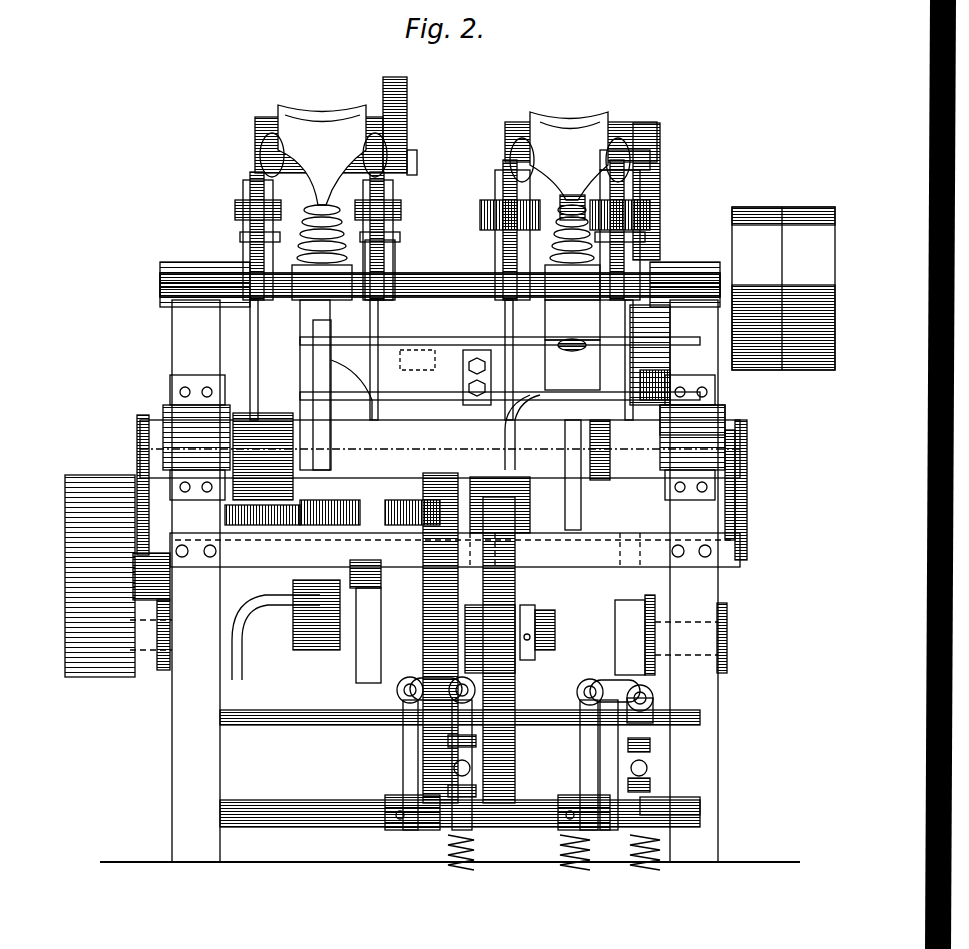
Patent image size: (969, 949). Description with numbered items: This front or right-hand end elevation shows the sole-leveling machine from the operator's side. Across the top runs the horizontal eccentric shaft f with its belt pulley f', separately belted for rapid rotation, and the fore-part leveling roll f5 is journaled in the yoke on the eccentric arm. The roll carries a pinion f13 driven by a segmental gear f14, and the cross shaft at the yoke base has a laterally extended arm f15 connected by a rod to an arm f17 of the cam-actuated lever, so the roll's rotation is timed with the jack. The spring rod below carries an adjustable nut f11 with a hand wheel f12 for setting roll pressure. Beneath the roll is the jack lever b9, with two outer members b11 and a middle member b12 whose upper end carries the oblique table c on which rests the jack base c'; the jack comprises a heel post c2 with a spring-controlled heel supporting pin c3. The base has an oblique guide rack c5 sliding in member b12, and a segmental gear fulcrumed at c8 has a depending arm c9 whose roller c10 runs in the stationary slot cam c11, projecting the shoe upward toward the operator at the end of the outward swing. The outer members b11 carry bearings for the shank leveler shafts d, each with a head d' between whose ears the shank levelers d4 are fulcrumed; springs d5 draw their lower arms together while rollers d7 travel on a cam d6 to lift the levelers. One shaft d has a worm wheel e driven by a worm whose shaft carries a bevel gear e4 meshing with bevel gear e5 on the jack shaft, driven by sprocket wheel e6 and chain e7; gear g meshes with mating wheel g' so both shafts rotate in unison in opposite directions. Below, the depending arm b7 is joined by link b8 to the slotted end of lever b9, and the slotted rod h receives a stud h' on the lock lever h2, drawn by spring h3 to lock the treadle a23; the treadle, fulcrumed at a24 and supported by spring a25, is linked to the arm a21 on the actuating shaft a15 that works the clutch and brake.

The frame standard H is at (445, 581).
The table c is at (440, 396).
The jack base c' is at (572, 319).
The heel post c2 is at (650, 300).
The heel supporting pin c3 is at (645, 212).
The guide rack c5 is at (572, 358).
The fulcrum c8 is at (548, 485).
The depending arm c9 is at (582, 506).
The roller c10 is at (296, 469).
The slot cam c11 is at (455, 433).
The shank leveler shaft d is at (468, 205).
The head d' is at (478, 220).
The shank leveler d4 is at (503, 160).
The spring d5 is at (492, 216).
The cam d6 is at (575, 235).
The roller d7 is at (648, 236).
The worm wheel e is at (660, 388).
The bevel gear e4 is at (705, 412).
The bevel gear e5 is at (606, 452).
The sprocket wheel e6 is at (150, 437).
The sprocket chain e7 is at (150, 455).
The eccentric shaft f is at (441, 355).
The belt pulley f' is at (783, 260).
The fore-part leveling roll f5 is at (575, 118).
The adjustable nut f11 is at (305, 650).
The hand wheel f12 is at (276, 627).
The pinion f13 is at (410, 135).
The segmental gear f14 is at (408, 92).
The arm f15 is at (410, 270).
The arm f17 is at (462, 372).
The gear wheel g is at (247, 518).
The mating wheel g' is at (412, 531).
The depending arm b7 is at (402, 735).
The connecting rod b8 is at (728, 640).
The jack lever b9 is at (365, 655).
The outer member b11 is at (686, 250).
The middle member b12 is at (262, 382).
The rod h is at (483, 765).
The stud h' is at (484, 842).
The lock lever h2 is at (655, 752).
The spring h3 is at (652, 772).
The actuating shaft a15 is at (578, 692).
The arm a21 is at (655, 694).
The treadle a23 is at (702, 808).
The fulcrum a24 is at (662, 838).
The spring a25 is at (632, 850).